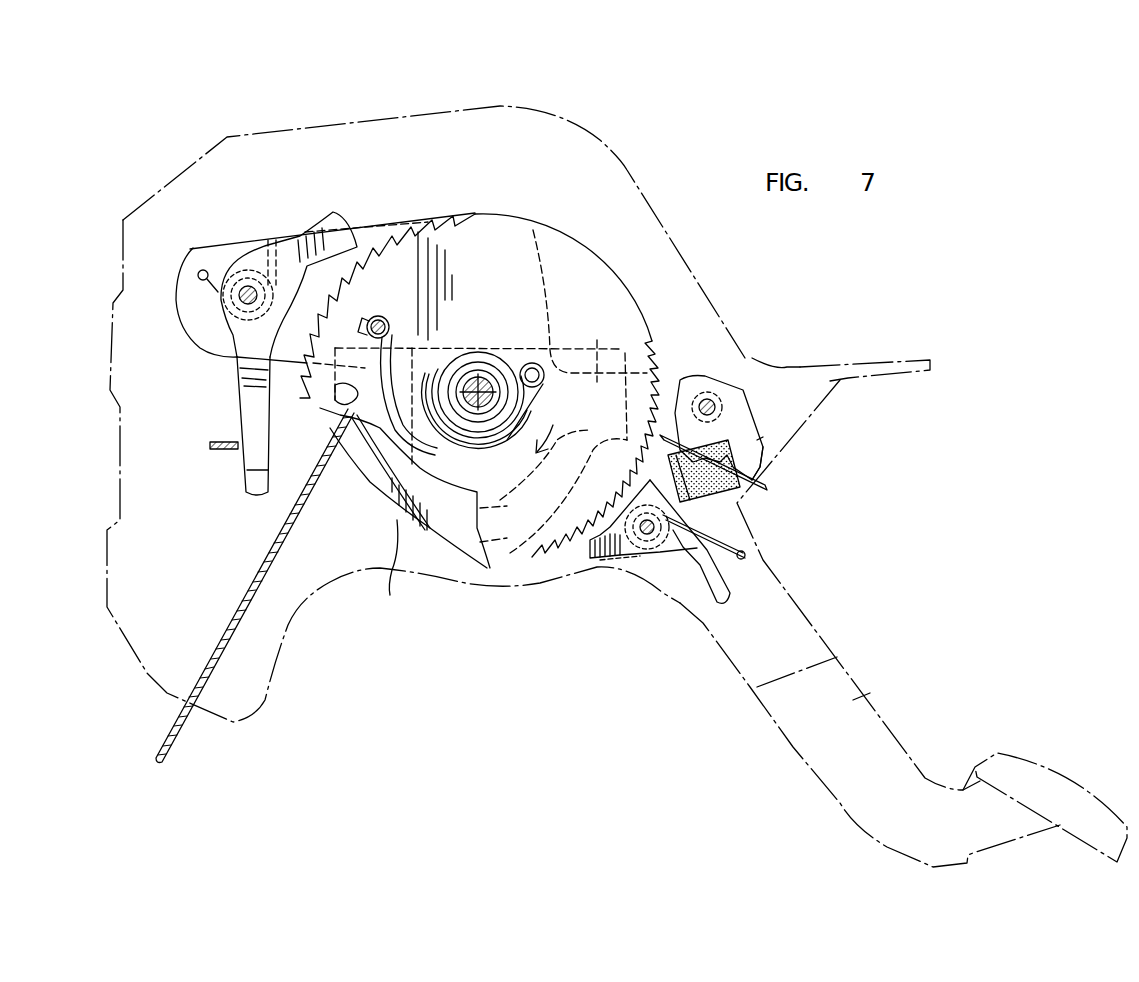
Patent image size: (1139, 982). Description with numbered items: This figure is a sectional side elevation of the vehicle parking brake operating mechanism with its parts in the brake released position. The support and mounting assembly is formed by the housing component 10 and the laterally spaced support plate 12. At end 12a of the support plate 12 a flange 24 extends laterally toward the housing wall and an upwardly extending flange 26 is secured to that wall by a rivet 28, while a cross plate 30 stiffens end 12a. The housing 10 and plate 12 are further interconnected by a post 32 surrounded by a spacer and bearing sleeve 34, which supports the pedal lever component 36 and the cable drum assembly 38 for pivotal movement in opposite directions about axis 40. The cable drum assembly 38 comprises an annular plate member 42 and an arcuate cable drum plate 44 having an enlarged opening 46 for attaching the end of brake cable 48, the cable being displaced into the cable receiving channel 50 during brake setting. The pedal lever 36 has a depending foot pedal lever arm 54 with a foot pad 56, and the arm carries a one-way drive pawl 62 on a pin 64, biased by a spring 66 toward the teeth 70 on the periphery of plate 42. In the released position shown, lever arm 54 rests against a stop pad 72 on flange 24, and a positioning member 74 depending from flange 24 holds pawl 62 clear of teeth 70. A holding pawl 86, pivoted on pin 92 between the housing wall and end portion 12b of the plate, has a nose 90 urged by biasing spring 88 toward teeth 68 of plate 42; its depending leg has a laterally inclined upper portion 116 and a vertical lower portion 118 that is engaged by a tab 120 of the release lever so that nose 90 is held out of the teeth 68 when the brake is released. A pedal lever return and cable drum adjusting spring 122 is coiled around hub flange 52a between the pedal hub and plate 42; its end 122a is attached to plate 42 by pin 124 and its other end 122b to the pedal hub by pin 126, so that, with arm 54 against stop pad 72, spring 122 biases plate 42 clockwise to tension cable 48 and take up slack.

The housing component 10 is at (632, 168).
The support plate 12 is at (375, 225).
The end of support plate 12a is at (720, 327).
The end portion of support plate 12b is at (192, 313).
The flange 24 is at (733, 460).
The upwardly extending flange 26 is at (733, 415).
The rivet 28 is at (712, 402).
The cross plate 30 is at (758, 440).
The post 32 is at (495, 370).
The spacer and bearing sleeve 34 is at (462, 380).
The pedal lever component 36 is at (810, 607).
The cable drum assembly 38 is at (612, 272).
The axis 40 is at (470, 400).
The annular plate member 42 is at (440, 250).
The arcuate cable drum plate 44 is at (392, 571).
The enlarged opening 46 is at (315, 425).
The brake cable 48 is at (178, 748).
The cable receiving channel 50 is at (380, 475).
The hub flange 52a is at (478, 345).
The foot pedal lever arm 54 is at (860, 700).
The foot pad 56 is at (1062, 783).
The one-way drive pawl 62 is at (614, 552).
The pin 64 is at (650, 540).
The spring 66 is at (747, 542).
The teeth 68 is at (390, 245).
The teeth 70 is at (588, 545).
The stop pad 72 is at (735, 488).
The positioning member 74 is at (718, 515).
The holding pawl 86 is at (253, 265).
The biasing spring 88 is at (198, 280).
The nose 90 is at (350, 235).
The pin 92 is at (232, 315).
The laterally inclined upper portion 116 is at (235, 384).
The vertical lower portion 118 is at (256, 480).
The tab 120 is at (210, 446).
The pedal lever return and cable drum adjusting spring 122 is at (462, 448).
The end of spring 122a is at (541, 381).
The other end of spring 122b is at (380, 320).
The pin 124 is at (540, 370).
The pin 126 is at (395, 340).